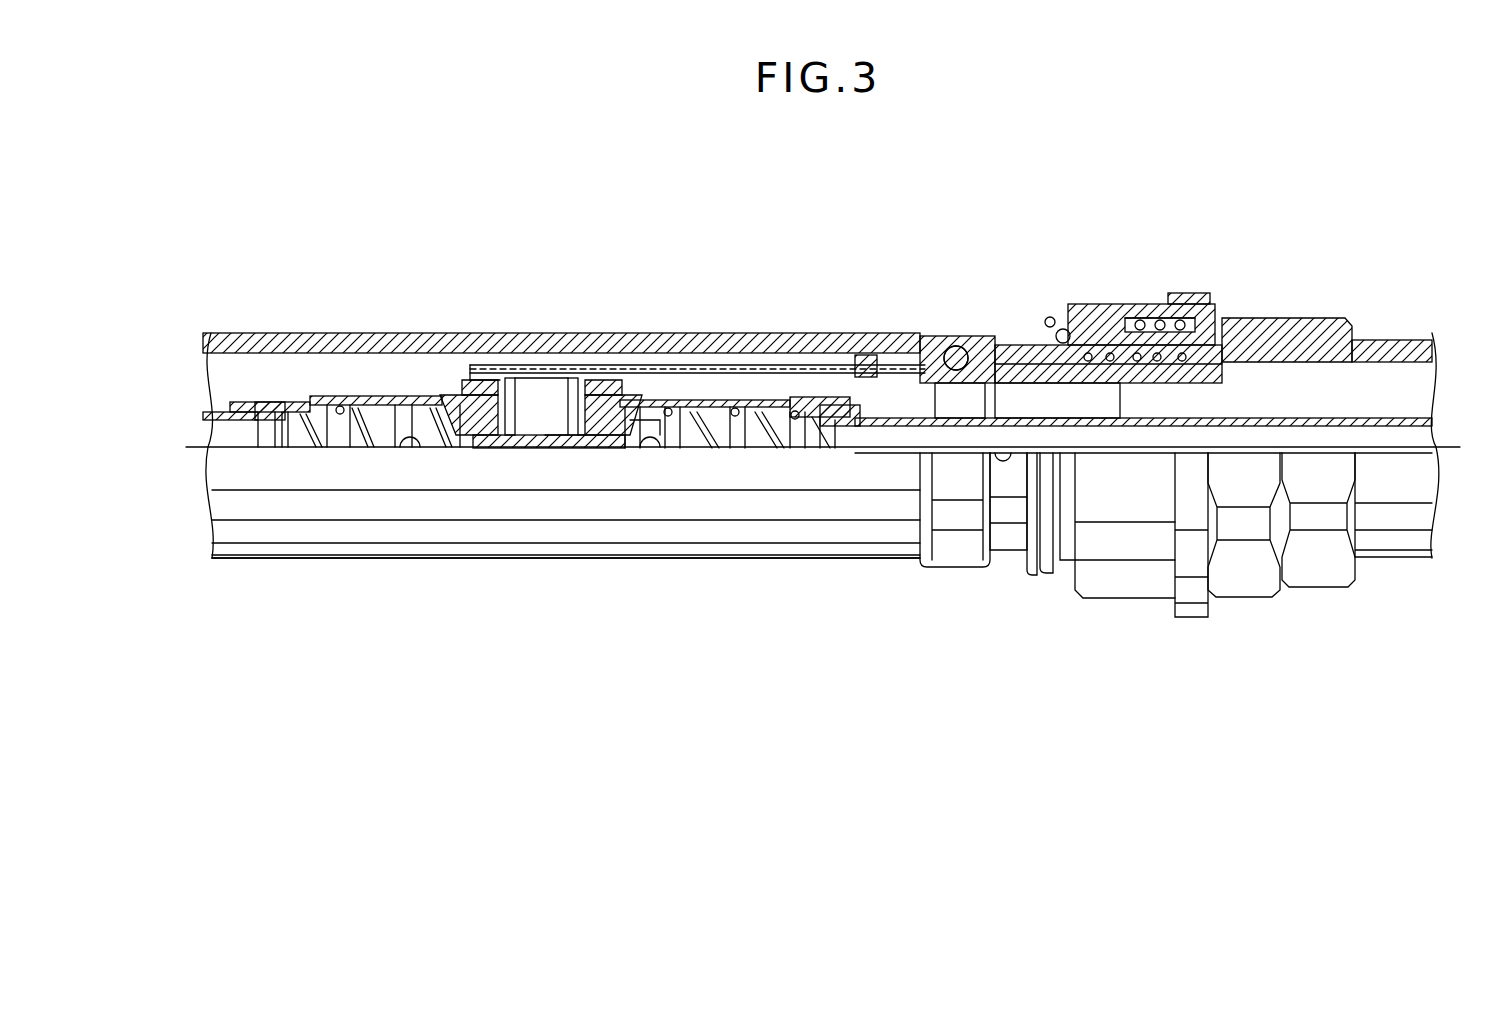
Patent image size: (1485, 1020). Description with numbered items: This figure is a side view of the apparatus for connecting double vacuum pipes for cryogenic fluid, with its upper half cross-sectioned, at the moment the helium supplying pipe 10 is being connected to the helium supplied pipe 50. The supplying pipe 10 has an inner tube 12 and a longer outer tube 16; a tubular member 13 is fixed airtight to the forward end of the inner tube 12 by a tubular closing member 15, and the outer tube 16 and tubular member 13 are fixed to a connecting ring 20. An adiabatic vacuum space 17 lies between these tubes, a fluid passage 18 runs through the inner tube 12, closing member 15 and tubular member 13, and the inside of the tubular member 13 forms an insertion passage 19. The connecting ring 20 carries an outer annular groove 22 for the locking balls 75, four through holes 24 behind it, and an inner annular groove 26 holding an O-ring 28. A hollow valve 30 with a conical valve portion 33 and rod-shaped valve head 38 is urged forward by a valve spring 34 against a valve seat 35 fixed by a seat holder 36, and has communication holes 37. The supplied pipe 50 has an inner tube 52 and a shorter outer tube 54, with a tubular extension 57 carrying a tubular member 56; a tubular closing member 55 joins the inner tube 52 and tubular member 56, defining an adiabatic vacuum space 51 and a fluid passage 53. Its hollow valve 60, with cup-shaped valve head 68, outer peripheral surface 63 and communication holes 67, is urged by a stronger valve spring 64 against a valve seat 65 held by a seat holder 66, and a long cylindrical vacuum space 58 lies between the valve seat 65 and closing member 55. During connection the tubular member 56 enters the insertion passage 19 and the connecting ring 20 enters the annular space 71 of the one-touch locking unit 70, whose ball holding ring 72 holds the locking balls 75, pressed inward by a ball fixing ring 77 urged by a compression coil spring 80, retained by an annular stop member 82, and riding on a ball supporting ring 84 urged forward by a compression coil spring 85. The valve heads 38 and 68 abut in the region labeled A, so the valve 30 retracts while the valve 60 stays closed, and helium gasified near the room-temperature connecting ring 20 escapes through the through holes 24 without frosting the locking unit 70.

The helium supplying pipe 10 is at (580, 570).
The inner tube 12 is at (227, 345).
The tubular member 13 is at (693, 365).
The tubular closing member 15 is at (322, 336).
The outer tube 16 is at (726, 346).
The adiabatic vacuum space 17 is at (378, 365).
The fluid passage 18 is at (318, 416).
The insertion passage 19 is at (527, 385).
The connecting ring 20 is at (925, 345).
The outer annular groove 22 is at (1011, 348).
The through holes 24 is at (1000, 350).
The inner annular groove 26 is at (965, 340).
The O-ring 28 is at (950, 352).
The hollow valve 30 is at (497, 449).
The conical valve portion 33 is at (445, 447).
The valve spring 34 is at (305, 420).
The valve seat 35 is at (447, 392).
The seat holder 36 is at (487, 372).
The communication holes 37 is at (416, 438).
The valve head 38 is at (556, 445).
The helium supplied pipe 50 is at (1174, 622).
The adiabatic vacuum space 51 is at (1383, 365).
The inner tube 52 is at (905, 430).
The fluid passage 53 is at (965, 435).
The outer tube 54 is at (1415, 350).
The tubular closing member 55 is at (780, 415).
The tubular member 56 is at (866, 357).
The tubular extension 57 is at (1315, 336).
The long cylindrical vacuum space 58 is at (655, 392).
The hollow valve 60 is at (672, 448).
The outer peripheral surface 63 is at (613, 440).
The valve spring 64 is at (742, 410).
The valve seat 65 is at (600, 398).
The seat holder 66 is at (592, 395).
The communication holes 67 is at (642, 422).
The valve head 68 is at (583, 445).
The one-touch locking unit 70 is at (1121, 300).
The annular space 71 is at (1068, 360).
The ball holding ring 72 is at (1243, 325).
The locking balls 75 is at (1072, 340).
The ball fixing ring 77 is at (1208, 318).
The compression coil spring 80 is at (1158, 308).
The annular stop member 82 is at (1050, 316).
The ball supporting ring 84 is at (1110, 310).
The compression coil spring 85 is at (1165, 320).
The region A is at (540, 400).